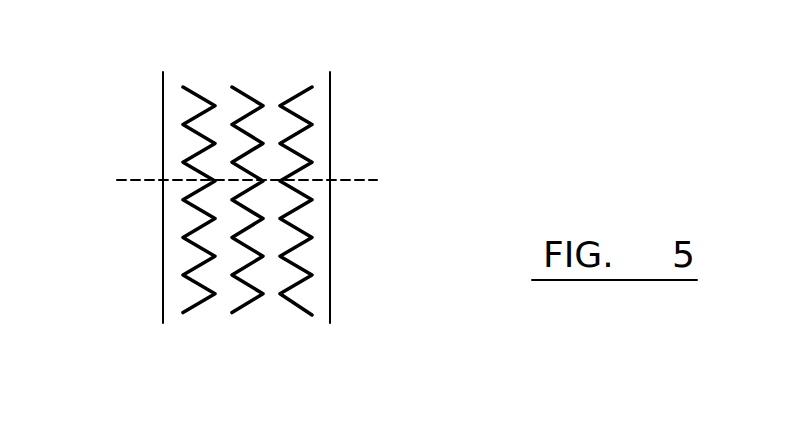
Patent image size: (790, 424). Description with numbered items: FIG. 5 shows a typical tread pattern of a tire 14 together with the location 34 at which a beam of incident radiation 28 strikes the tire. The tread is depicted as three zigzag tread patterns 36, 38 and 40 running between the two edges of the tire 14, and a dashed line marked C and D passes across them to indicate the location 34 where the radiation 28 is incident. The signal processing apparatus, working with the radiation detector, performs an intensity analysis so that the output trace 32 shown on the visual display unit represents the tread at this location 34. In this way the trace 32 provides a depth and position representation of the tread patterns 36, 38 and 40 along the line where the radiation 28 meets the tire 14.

The tire 14 is at (330, 102).
The radiation 28 is at (150, 182).
The output trace 32 is at (419, 418).
The location 34 is at (384, 177).
The tread pattern 36 is at (202, 303).
The tread pattern 38 is at (247, 308).
The tread pattern 40 is at (292, 310).